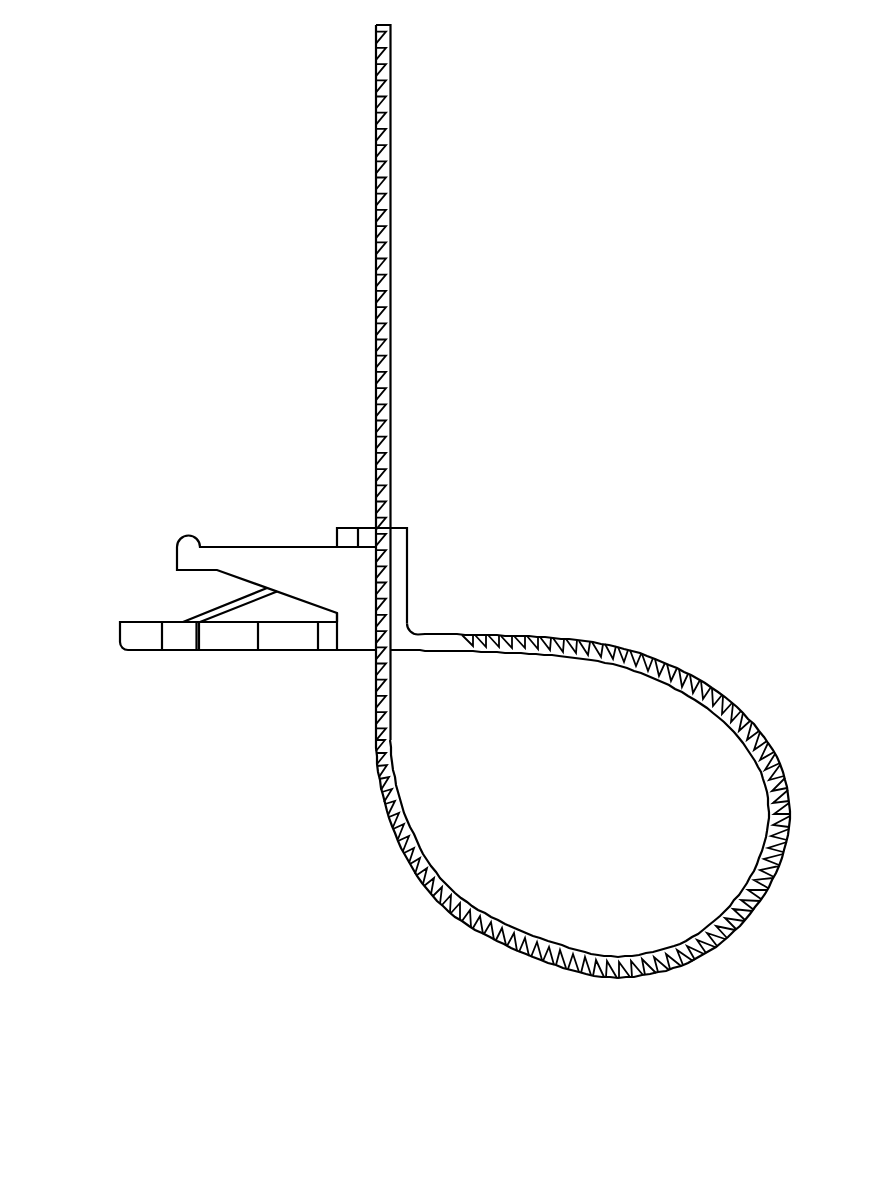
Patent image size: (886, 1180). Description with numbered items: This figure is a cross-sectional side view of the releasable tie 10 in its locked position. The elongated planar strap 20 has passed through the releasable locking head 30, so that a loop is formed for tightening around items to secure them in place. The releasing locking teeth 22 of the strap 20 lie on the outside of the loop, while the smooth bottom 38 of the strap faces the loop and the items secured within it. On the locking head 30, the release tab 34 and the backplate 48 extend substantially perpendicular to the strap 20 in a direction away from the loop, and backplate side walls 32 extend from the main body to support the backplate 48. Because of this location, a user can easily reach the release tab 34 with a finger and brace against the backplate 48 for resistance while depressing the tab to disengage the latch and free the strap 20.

The releasable tie 10 is at (679, 300).
The elongated planar strap 20 is at (622, 619).
The releasing locking teeth 22 is at (727, 937).
The smooth bottom 38 is at (570, 653).
The releasable locking head 30 is at (114, 577).
The release tab 34 is at (252, 547).
The backplate side walls 32 is at (218, 605).
The backplate 48 is at (228, 652).